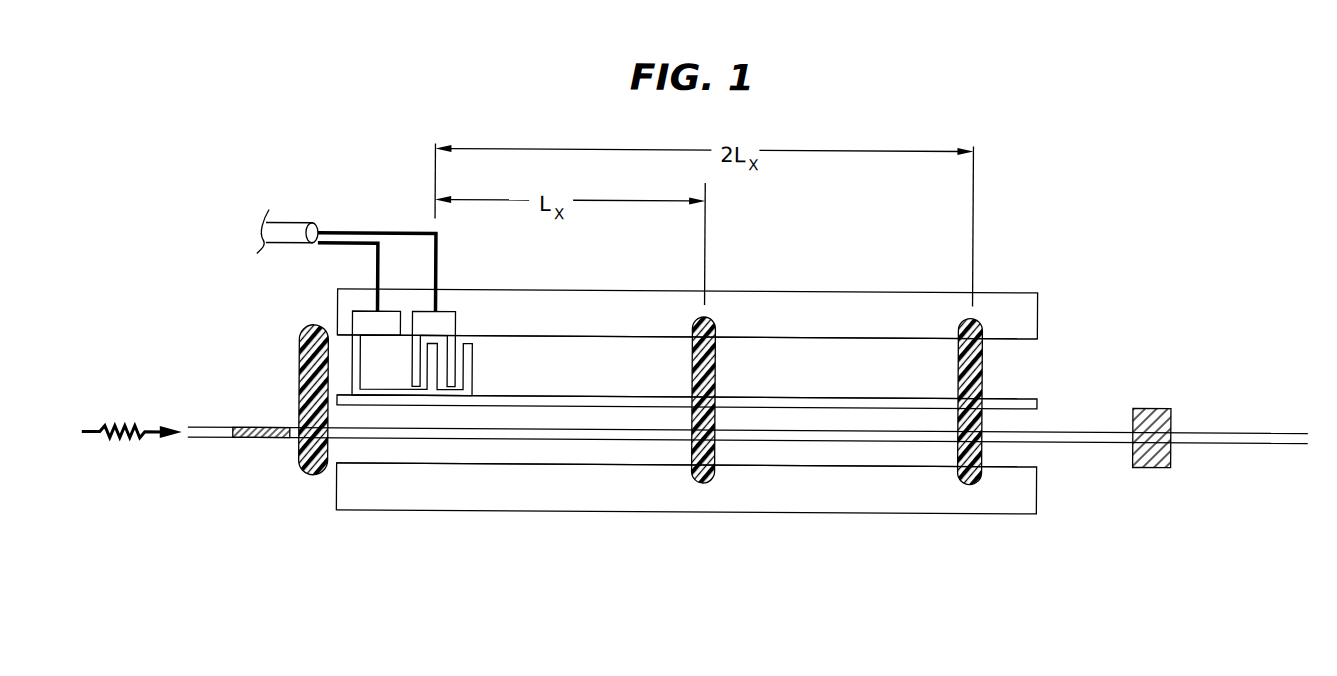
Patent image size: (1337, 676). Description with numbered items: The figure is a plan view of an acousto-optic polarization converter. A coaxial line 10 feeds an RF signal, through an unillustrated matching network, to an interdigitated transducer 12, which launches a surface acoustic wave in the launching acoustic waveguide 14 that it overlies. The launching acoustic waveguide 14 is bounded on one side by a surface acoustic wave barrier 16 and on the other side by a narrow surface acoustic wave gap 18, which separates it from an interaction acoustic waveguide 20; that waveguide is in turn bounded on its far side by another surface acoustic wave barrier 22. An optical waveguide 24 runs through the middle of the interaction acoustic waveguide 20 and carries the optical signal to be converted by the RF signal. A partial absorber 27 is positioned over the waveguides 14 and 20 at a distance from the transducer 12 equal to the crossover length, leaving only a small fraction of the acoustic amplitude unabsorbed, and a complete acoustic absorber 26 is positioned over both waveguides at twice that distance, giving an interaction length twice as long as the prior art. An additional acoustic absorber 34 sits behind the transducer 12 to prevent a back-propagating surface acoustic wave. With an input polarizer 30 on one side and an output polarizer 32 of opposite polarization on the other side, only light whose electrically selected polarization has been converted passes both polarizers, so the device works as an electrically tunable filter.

The coaxial line 10 is at (293, 226).
The interdigitated transducer 12 is at (455, 270).
The launching acoustic waveguide 14 is at (1020, 359).
The surface acoustic wave barrier 16 is at (1033, 302).
The surface acoustic wave gap 18 is at (1035, 401).
The interaction acoustic waveguide 20 is at (1030, 456).
The surface acoustic wave barrier 22 is at (1030, 498).
The optical waveguide 24 is at (207, 440).
The complete acoustic absorber 26 is at (972, 484).
The partial absorber 27 is at (703, 483).
The input polarizer 30 is at (268, 428).
The output polarizer 32 is at (1163, 407).
The additional acoustic absorber 34 is at (298, 450).